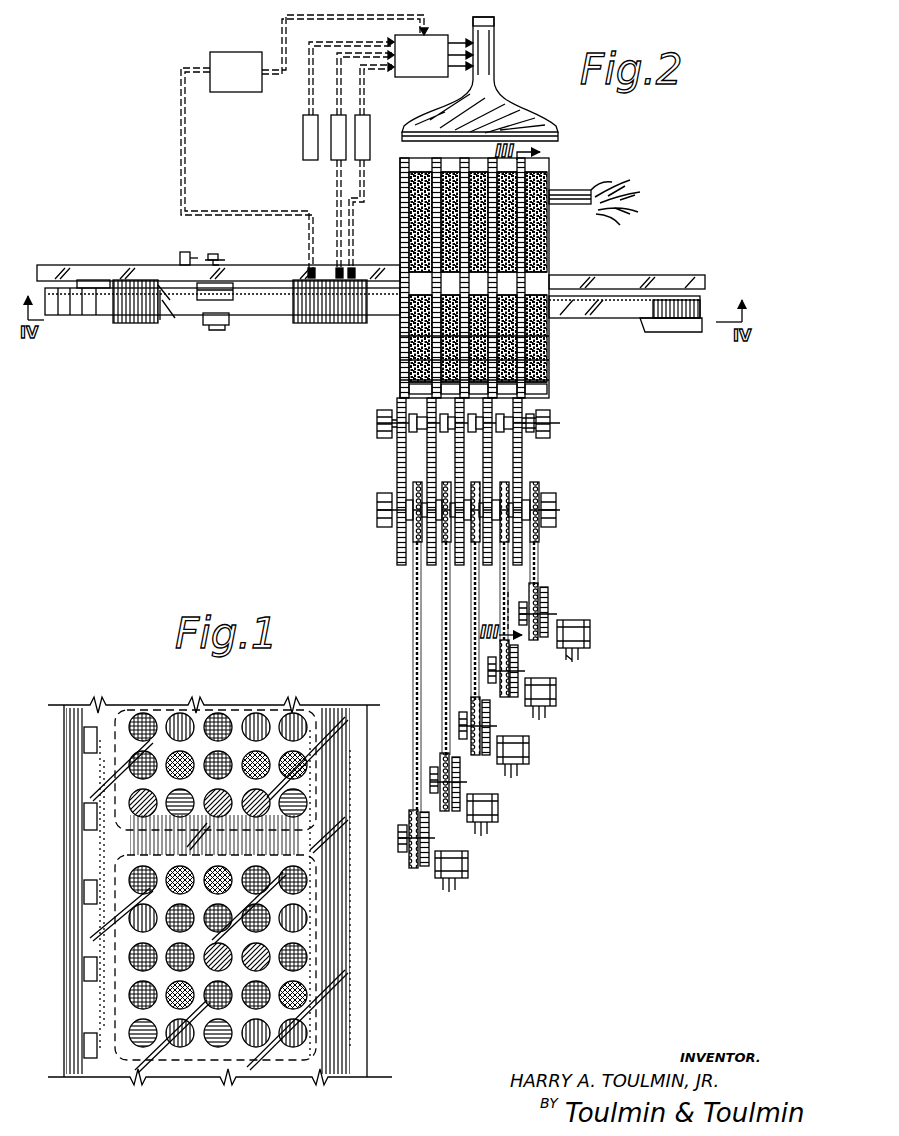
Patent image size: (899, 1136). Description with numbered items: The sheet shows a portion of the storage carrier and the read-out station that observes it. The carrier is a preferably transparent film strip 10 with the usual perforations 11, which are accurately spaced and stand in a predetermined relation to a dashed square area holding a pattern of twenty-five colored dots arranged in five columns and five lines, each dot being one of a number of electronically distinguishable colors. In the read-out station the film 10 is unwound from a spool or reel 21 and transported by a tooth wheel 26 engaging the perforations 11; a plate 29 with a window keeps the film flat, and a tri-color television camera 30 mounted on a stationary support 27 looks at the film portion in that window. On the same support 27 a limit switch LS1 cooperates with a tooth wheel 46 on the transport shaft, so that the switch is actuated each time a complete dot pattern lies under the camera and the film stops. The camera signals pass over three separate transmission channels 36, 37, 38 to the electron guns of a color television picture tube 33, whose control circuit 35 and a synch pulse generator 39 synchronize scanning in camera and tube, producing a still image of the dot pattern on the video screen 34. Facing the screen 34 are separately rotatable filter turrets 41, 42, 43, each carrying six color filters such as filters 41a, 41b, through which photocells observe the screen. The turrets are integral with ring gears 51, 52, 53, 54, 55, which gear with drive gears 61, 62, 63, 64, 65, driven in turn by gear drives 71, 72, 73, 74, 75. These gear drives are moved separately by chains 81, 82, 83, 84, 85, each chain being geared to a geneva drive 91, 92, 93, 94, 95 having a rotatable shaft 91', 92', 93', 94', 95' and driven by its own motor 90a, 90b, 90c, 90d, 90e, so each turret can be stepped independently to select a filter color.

In FIG. 2, the film strip 10 is at (167, 318).
In FIG. 1, the film strip 10 is at (224, 891).
In FIG. 1, the perforations 11 is at (83, 1040).
In FIG. 2, the spool or reel 21 is at (72, 320).
In FIG. 2, the tooth wheel 26 is at (226, 284).
In FIG. 2, the stationary support 27 is at (62, 268).
In FIG. 2, the plate 29 is at (132, 325).
In FIG. 2, the tri-color television camera 30 is at (292, 320).
In FIG. 2, the television picture tube 33 is at (510, 125).
In FIG. 2, the video screen 34 is at (512, 269).
In FIG. 2, the control circuit 35 is at (416, 64).
In FIG. 2, the transmission channel 36 is at (302, 152).
In FIG. 2, the transmission channel 37 is at (334, 118).
In FIG. 2, the transmission channel 38 is at (364, 140).
In FIG. 2, the synch pulse generator 39 is at (218, 58).
In FIG. 2, the turret 41 is at (566, 268).
In FIG. 2, the filter 41a is at (593, 190).
In FIG. 2, the filter 41b is at (550, 357).
In FIG. 2, the turret 42 is at (550, 238).
In FIG. 2, the turret 43 is at (549, 180).
In FIG. 2, the tooth wheel 46 is at (212, 254).
In FIG. 2, the limit switch LS1 is at (181, 256).
In FIG. 2, the ring gear 51 is at (549, 350).
In FIG. 2, the ring gear 52 is at (549, 373).
In FIG. 2, the ring gear 53 is at (405, 337).
In FIG. 2, the ring gear 54 is at (401, 360).
In FIG. 2, the ring gear 55 is at (401, 379).
In FIG. 2, the drive gear 61 is at (522, 438).
In FIG. 2, the drive gear 62 is at (552, 418).
In FIG. 2, the drive gear 63 is at (540, 400).
In FIG. 2, the drive gear 64 is at (395, 416).
In FIG. 2, the drive gear 65 is at (400, 444).
In FIG. 2, the gear drive 71 is at (522, 480).
In FIG. 2, the gear drive 72 is at (492, 470).
In FIG. 2, the gear drive 73 is at (455, 555).
In FIG. 2, the gear drive 74 is at (427, 462).
In FIG. 2, the gear drive 75 is at (397, 532).
In FIG. 2, the chain 81 is at (541, 590).
In FIG. 2, the chain 82 is at (515, 578).
In FIG. 2, the chain 83 is at (475, 630).
In FIG. 2, the chain 84 is at (446, 605).
In FIG. 2, the chain 85 is at (417, 655).
In FIG. 2, the motor 90a is at (591, 630).
In FIG. 2, the motor 90b is at (557, 693).
In FIG. 2, the motor 90c is at (530, 752).
In FIG. 2, the motor 90d is at (499, 810).
In FIG. 2, the motor 90e is at (469, 866).
In FIG. 2, the geneva drive 91 is at (560, 611).
In FIG. 2, the rotatable shaft 91' is at (580, 596).
In FIG. 2, the geneva drive 92 is at (562, 668).
In FIG. 2, the rotatable shaft 92' is at (560, 656).
In FIG. 2, the geneva drive 93 is at (536, 726).
In FIG. 2, the rotatable shaft 93' is at (528, 720).
In FIG. 2, the geneva drive 94 is at (511, 782).
In FIG. 2, the rotatable shaft 94' is at (497, 779).
In FIG. 2, the geneva drive 95 is at (410, 862).
In FIG. 2, the rotatable shaft 95' is at (465, 840).